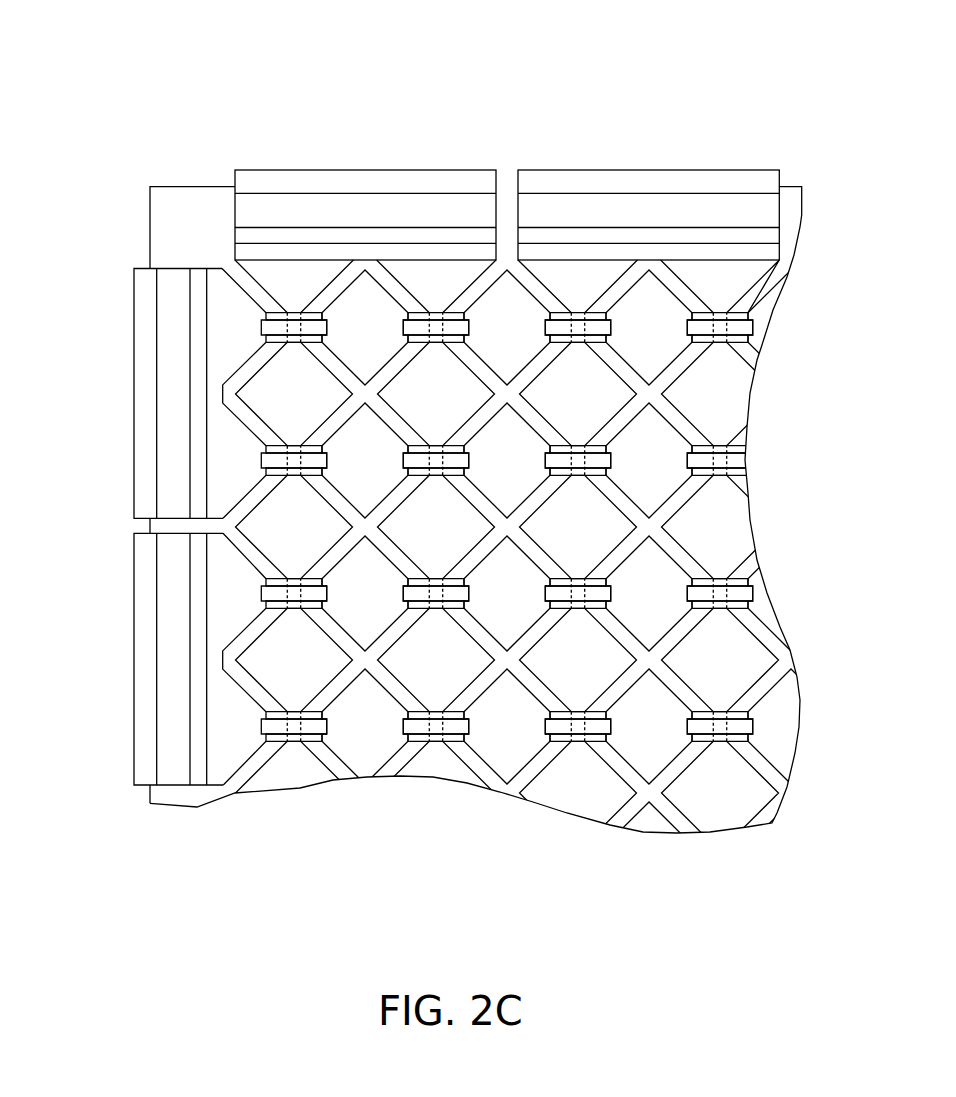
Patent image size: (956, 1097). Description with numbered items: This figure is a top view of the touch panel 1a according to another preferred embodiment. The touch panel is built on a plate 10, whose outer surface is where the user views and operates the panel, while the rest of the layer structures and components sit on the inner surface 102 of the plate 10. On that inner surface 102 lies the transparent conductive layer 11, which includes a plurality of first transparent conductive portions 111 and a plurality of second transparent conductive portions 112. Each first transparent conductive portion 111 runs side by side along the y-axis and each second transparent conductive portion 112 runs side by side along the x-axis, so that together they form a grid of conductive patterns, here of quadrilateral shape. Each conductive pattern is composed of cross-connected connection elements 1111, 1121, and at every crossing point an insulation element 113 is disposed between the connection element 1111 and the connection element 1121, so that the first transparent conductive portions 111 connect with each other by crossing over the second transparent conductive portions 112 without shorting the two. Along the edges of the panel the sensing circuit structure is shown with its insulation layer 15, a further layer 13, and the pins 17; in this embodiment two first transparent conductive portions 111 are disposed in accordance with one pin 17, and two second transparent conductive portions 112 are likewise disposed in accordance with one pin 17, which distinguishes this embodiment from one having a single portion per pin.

The touch panel 1a is at (120, 72).
The plate 10 is at (150, 213).
The inner surface 102 is at (173, 198).
The transparent conductive layer 11 is at (528, 601).
The first transparent conductive portion 111 is at (500, 577).
The connection element 1111 is at (323, 330).
The second transparent conductive portion 112 is at (552, 589).
The connection element 1121 is at (294, 314).
The insulation element 113 is at (323, 316).
The first conductive layer 13 is at (200, 275).
The insulation layer 15 is at (240, 207).
The pin 17 is at (370, 178).